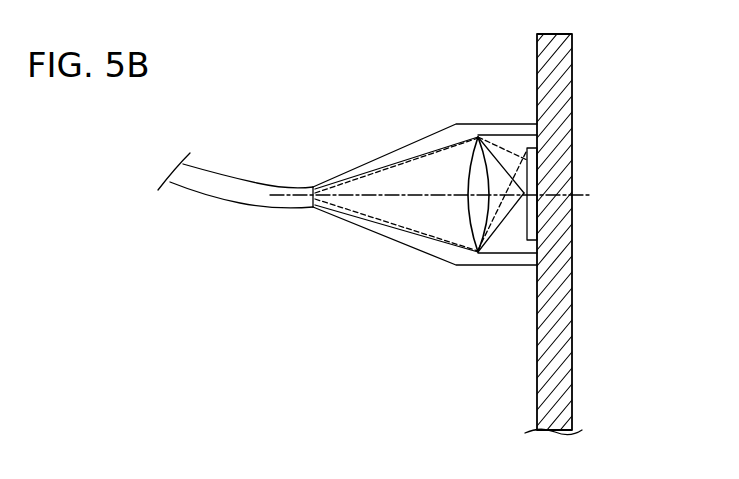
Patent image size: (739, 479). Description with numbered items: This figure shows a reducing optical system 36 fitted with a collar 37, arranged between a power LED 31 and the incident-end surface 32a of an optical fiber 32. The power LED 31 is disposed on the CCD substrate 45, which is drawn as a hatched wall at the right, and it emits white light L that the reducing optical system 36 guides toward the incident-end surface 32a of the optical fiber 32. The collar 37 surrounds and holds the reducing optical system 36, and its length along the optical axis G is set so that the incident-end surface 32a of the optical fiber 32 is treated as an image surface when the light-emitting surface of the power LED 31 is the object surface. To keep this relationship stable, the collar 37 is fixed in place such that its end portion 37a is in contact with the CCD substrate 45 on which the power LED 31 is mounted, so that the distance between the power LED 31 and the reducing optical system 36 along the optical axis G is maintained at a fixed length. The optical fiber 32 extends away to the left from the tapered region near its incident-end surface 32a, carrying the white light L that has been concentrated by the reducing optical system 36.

The power LED 31 is at (523, 186).
The optical fiber 32 is at (255, 207).
The incident-end surface 32a is at (333, 172).
The reducing optical system 36 is at (474, 218).
The collar 37 is at (485, 266).
The end portion 37a is at (537, 255).
The CCD substrate 45 is at (572, 75).
The optical axis G is at (398, 198).
The white light L is at (515, 216).